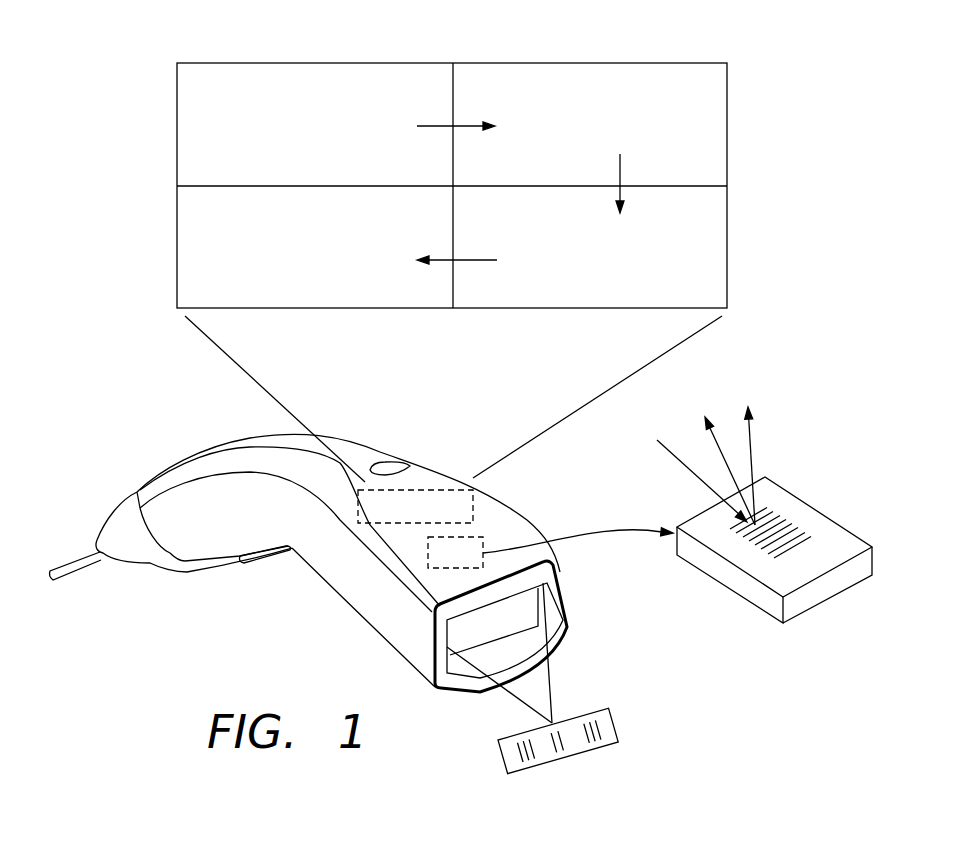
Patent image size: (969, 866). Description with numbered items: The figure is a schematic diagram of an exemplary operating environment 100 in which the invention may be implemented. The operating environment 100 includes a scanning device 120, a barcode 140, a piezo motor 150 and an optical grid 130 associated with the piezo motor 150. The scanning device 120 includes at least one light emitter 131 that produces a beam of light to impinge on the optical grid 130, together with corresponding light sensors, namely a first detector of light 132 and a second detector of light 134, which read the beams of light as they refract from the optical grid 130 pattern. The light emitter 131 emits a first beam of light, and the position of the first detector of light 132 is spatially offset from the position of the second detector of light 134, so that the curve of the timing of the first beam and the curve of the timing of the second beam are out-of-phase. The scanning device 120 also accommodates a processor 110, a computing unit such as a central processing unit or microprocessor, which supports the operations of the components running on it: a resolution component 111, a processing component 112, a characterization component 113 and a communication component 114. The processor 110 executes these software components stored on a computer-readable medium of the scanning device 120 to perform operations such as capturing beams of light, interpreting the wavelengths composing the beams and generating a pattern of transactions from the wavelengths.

The operating environment 100 is at (90, 78).
The processor 110 is at (473, 506).
The resolution component 111 is at (355, 63).
The processing component 112 is at (620, 63).
The characterization component 113 is at (727, 220).
The communication component 114 is at (177, 220).
The scanning device 120 is at (323, 591).
The optical grid 130 is at (567, 583).
The light emitter 131 is at (689, 468).
The first detector of light 132 is at (719, 456).
The second detector of light 134 is at (748, 450).
The barcode 140 is at (517, 772).
The piezo motor 150 is at (800, 498).